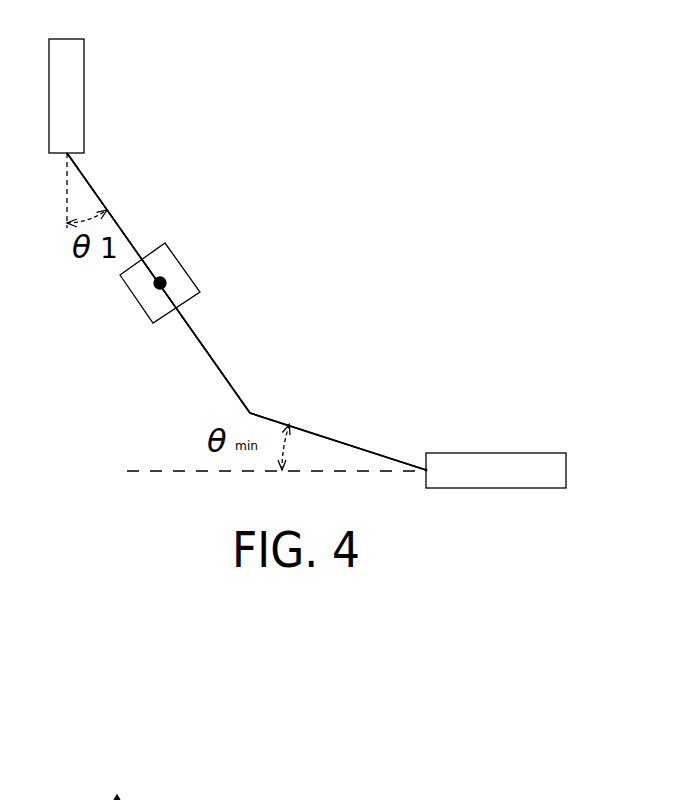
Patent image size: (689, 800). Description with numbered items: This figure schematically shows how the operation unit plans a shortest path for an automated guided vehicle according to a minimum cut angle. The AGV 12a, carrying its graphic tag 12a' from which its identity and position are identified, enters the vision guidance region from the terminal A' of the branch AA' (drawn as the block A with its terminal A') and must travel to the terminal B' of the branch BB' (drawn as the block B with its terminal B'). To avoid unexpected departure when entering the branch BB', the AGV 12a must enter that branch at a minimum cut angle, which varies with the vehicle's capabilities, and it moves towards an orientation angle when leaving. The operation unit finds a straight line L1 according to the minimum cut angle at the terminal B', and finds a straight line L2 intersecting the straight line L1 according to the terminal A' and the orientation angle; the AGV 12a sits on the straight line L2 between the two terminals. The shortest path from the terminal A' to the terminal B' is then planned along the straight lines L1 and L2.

The automated guided vehicle 12a is at (190, 275).
The graphic tag 12a' is at (116, 320).
The branch AA' A is at (66, 76).
The terminal A' is at (48, 190).
The branch BB' B is at (510, 470).
The terminal B' is at (412, 444).
The straight line L1 is at (334, 436).
The straight line L2 is at (228, 382).